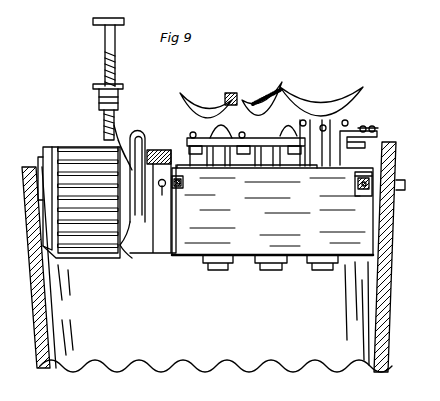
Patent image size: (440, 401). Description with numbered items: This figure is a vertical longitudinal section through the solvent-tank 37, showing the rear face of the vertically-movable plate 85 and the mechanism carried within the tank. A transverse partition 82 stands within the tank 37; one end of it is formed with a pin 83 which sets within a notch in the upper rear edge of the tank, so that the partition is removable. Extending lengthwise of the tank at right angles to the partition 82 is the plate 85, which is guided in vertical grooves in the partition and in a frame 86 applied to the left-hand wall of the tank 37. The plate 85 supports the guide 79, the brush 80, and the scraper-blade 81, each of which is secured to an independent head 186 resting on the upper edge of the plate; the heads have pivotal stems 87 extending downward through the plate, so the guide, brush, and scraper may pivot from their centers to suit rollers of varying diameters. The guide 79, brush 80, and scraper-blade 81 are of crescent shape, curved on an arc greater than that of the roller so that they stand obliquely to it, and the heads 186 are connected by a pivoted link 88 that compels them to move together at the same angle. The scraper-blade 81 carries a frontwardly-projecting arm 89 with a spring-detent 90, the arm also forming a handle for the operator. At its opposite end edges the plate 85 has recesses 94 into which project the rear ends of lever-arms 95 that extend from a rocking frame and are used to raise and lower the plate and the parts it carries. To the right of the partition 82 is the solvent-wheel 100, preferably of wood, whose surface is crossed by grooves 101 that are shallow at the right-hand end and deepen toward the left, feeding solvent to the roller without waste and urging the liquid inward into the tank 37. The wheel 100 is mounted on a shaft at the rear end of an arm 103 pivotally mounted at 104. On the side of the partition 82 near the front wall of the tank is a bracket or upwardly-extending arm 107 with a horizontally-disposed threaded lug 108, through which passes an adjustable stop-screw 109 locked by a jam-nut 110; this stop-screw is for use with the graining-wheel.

The solvent-tank 37 is at (216, 345).
The guide 79 is at (201, 113).
The brush 80 is at (252, 110).
The scraper-blade 81 is at (356, 113).
The transverse partition 82 is at (170, 255).
The pin 83 is at (160, 199).
The vertically-movable plate 85 is at (258, 231).
The frame 86 is at (380, 210).
The pivotal stems 87 is at (218, 270).
The pivoted link 88 is at (188, 139).
The frontwardly-projecting arm 89 is at (377, 134).
The spring-detent 90 is at (367, 127).
The recesses 94 is at (184, 184).
The lever-arms 95 is at (179, 190).
The solvent-wheel 100 is at (48, 151).
The grooves 101 is at (78, 165).
The arm 103 is at (138, 225).
The pivot 104 is at (177, 156).
The bracket or upwardly-extending arm 107 is at (120, 121).
The threaded lug 108 is at (103, 105).
The stop-screw 109 is at (115, 54).
The jam-nut 110 is at (122, 87).
The heads 186 is at (268, 166).